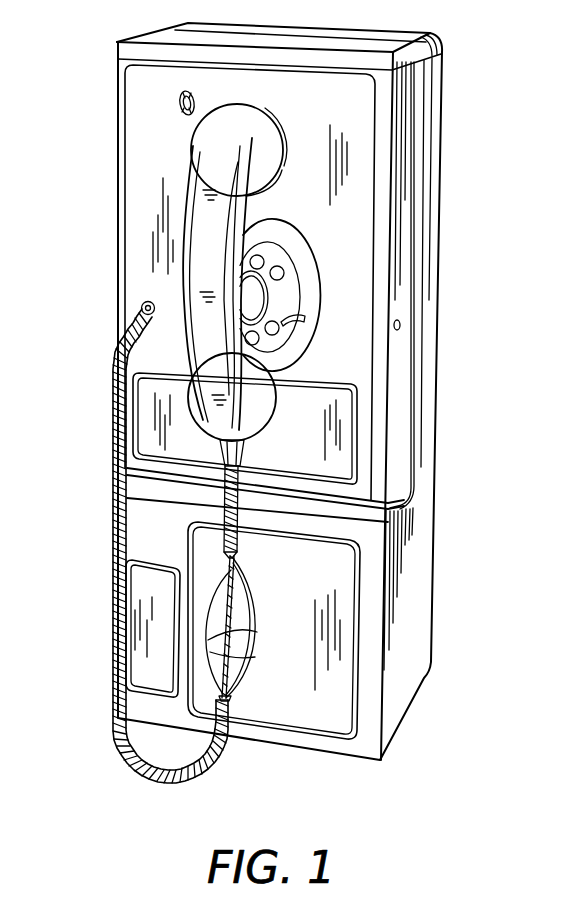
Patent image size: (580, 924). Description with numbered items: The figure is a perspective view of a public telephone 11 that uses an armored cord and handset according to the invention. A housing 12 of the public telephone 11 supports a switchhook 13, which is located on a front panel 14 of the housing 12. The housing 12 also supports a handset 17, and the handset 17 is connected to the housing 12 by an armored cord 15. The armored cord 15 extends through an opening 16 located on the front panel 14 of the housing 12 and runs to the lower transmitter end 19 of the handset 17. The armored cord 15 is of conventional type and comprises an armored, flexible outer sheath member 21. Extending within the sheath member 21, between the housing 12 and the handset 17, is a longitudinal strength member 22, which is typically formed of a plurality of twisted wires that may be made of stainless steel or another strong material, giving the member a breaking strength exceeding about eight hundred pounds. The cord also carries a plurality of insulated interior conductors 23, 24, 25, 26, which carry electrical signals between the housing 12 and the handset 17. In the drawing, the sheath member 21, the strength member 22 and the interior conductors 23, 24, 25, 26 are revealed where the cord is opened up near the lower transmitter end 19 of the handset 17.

The public telephone 11 is at (458, 118).
The housing 12 is at (403, 257).
The switchhook 13 is at (248, 195).
The front panel 14 is at (143, 132).
The armored cord 15 is at (113, 598).
The opening 16 is at (148, 305).
The handset 17 is at (200, 228).
The lower transmitter end 19 is at (252, 421).
The outer sheath member 21 is at (115, 492).
The longitudinal strength member 22 is at (232, 632).
The insulated interior conductor 23 is at (233, 562).
The insulated interior conductor 24 is at (243, 659).
The insulated interior conductor 25 is at (250, 584).
The insulated interior conductor 26 is at (243, 680).